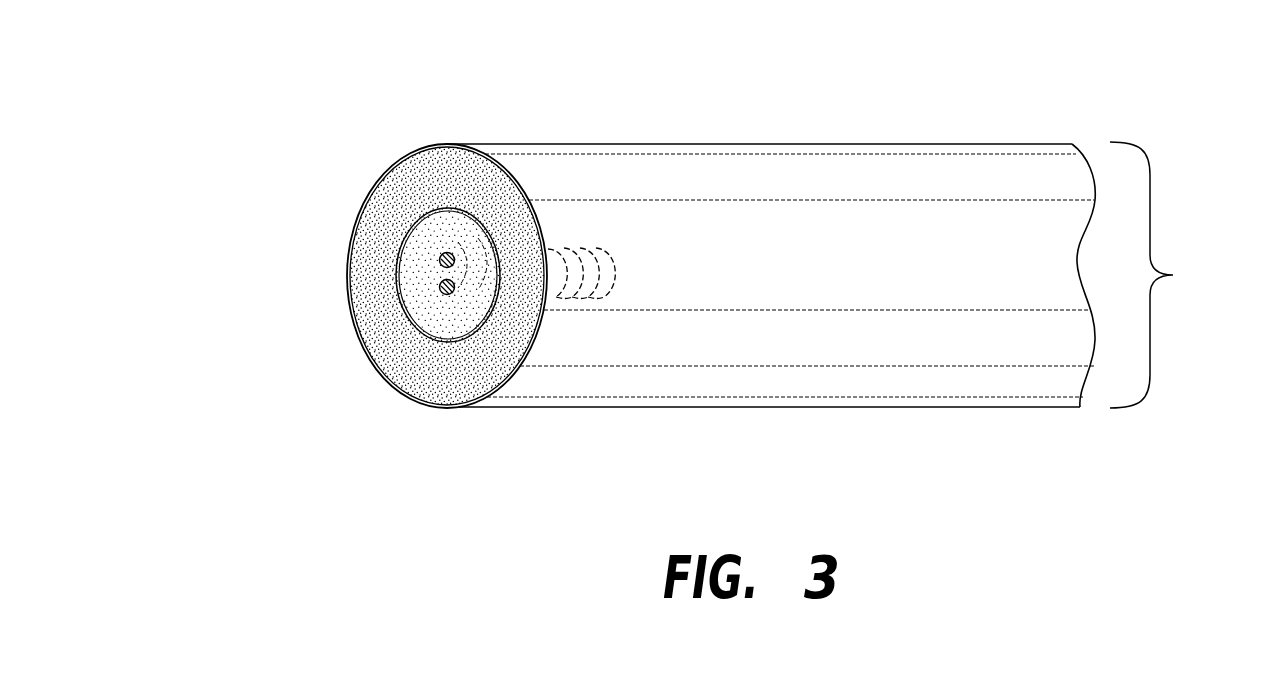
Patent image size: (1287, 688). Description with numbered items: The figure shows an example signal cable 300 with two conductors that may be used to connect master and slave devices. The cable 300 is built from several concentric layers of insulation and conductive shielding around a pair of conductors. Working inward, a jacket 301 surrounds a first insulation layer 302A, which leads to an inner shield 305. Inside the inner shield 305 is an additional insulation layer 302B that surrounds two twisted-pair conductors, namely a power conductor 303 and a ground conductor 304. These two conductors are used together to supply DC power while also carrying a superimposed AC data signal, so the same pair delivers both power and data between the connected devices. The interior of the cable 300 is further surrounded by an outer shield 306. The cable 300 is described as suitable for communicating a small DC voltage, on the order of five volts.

The cable 300 is at (1176, 275).
The jacket 301 is at (717, 145).
The first insulation layer 302A is at (453, 177).
The additional insulation layer 302B is at (437, 243).
The power conductor 303 is at (440, 265).
The ground conductor 304 is at (441, 292).
The inner shield 305 is at (397, 263).
The outer shield 306 is at (470, 408).